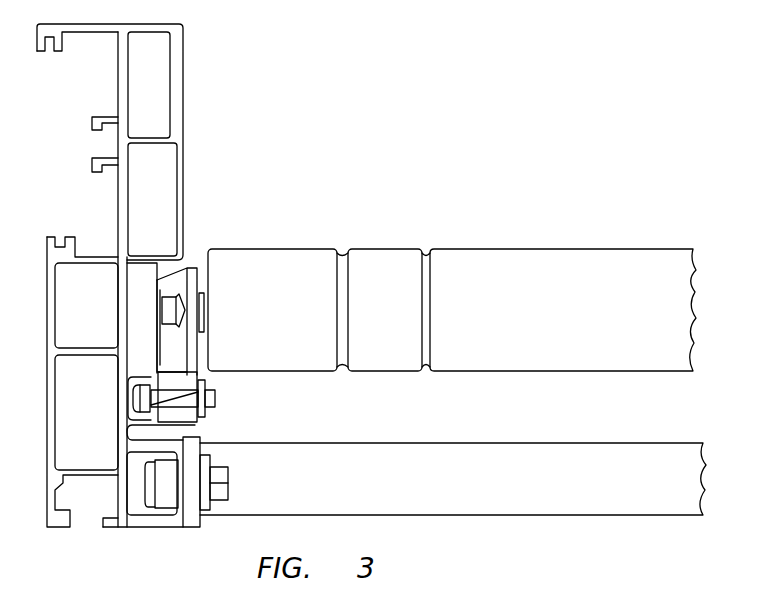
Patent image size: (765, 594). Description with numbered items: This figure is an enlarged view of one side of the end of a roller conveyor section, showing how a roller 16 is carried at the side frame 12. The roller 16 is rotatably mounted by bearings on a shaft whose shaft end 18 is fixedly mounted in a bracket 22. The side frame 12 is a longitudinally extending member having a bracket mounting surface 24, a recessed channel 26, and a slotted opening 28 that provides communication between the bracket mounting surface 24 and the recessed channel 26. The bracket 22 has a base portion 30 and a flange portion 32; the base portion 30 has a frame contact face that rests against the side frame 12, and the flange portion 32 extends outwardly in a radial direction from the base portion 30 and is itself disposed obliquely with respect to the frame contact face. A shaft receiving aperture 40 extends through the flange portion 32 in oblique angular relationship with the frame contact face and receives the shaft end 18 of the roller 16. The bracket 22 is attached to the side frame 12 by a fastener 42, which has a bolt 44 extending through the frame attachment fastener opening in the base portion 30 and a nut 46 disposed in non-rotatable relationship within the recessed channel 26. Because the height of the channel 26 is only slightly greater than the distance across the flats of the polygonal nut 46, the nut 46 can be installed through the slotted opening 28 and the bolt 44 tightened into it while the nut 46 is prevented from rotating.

The side frame 12 is at (184, 203).
The roller 16 is at (502, 317).
The shaft end 18 is at (163, 302).
The bracket 22 is at (197, 251).
The bracket mounting surface 24 is at (163, 368).
The recessed channel 26 is at (128, 414).
The slotted opening 28 is at (206, 394).
The base portion 30 is at (192, 420).
The flange portion 32 is at (168, 350).
The shaft receiving aperture 40 is at (172, 295).
The fastener 42 is at (228, 410).
The bolt 44 is at (209, 392).
The nut 46 is at (187, 398).